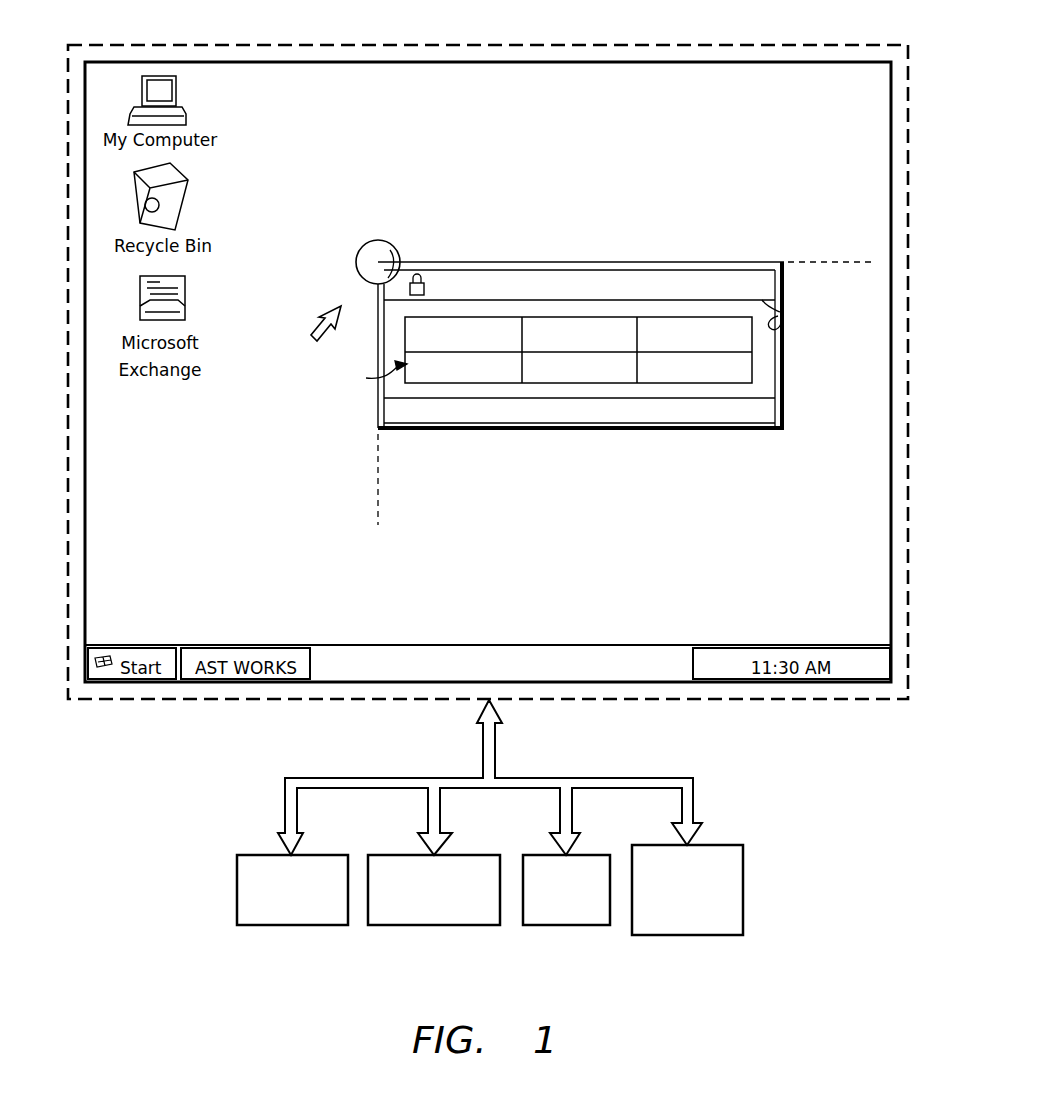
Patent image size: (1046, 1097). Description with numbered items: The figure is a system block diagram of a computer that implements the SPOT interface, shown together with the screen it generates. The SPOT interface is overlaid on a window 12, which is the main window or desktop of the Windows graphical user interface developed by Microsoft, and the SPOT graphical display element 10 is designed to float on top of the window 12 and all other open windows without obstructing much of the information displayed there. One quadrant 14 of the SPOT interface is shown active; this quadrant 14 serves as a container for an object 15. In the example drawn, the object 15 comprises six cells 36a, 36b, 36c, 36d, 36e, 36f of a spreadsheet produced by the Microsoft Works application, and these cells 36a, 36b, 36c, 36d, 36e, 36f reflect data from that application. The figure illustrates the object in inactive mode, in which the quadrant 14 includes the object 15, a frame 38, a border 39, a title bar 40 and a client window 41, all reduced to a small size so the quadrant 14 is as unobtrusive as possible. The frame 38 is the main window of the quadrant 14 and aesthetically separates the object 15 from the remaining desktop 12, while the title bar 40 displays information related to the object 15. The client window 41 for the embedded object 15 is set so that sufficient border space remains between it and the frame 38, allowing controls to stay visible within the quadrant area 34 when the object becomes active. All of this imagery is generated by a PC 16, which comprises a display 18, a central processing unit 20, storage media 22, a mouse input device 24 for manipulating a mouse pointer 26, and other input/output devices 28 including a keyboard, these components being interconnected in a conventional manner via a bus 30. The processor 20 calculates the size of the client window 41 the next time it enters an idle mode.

The SPOT graphical display element 10 is at (378, 244).
The window 12 is at (660, 62).
The quadrant 14 is at (611, 346).
The object 15 is at (373, 376).
The PC 16 is at (170, 792).
The display 18 is at (262, 700).
The central processing unit 20 is at (434, 928).
The storage media 22 is at (291, 928).
The mouse input device 24 is at (566, 928).
The mouse pointer 26 is at (330, 312).
The other input/output devices 28 is at (688, 937).
The bus 30 is at (608, 778).
The quadrant area 34 is at (470, 522).
The cell 36a is at (422, 345).
The cell 36b is at (480, 375).
The cell 36c is at (545, 345).
The cell 36d is at (607, 375).
The cell 36e is at (668, 345).
The cell 36f is at (720, 375).
The frame 38 is at (730, 262).
The border 39 is at (768, 388).
The title bar 40 is at (770, 288).
The client window 41 is at (780, 312).